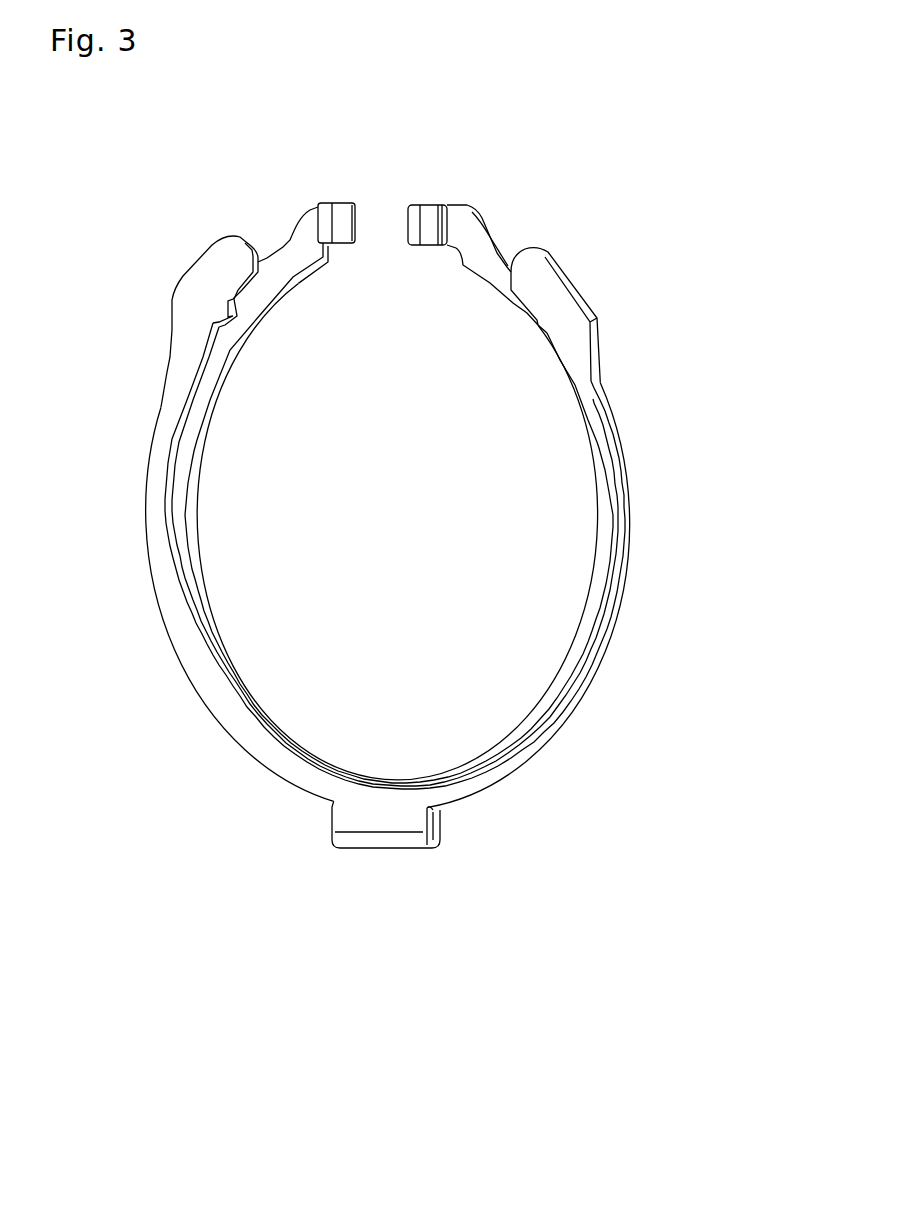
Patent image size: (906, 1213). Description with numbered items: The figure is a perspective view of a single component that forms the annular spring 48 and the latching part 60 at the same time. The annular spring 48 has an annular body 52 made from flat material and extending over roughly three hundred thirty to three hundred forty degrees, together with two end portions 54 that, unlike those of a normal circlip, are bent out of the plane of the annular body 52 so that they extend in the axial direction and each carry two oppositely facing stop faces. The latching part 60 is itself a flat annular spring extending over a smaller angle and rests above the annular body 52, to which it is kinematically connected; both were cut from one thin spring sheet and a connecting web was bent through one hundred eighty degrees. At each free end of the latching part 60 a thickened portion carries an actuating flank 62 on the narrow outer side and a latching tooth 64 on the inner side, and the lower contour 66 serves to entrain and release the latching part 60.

The annular spring 48 is at (202, 470).
The annular body 52 is at (478, 247).
The end portions 54 is at (405, 220).
The latching part 60 is at (592, 600).
The actuating flank 62 is at (598, 348).
The latching tooth 64 is at (220, 312).
The lower contour 66 is at (386, 842).